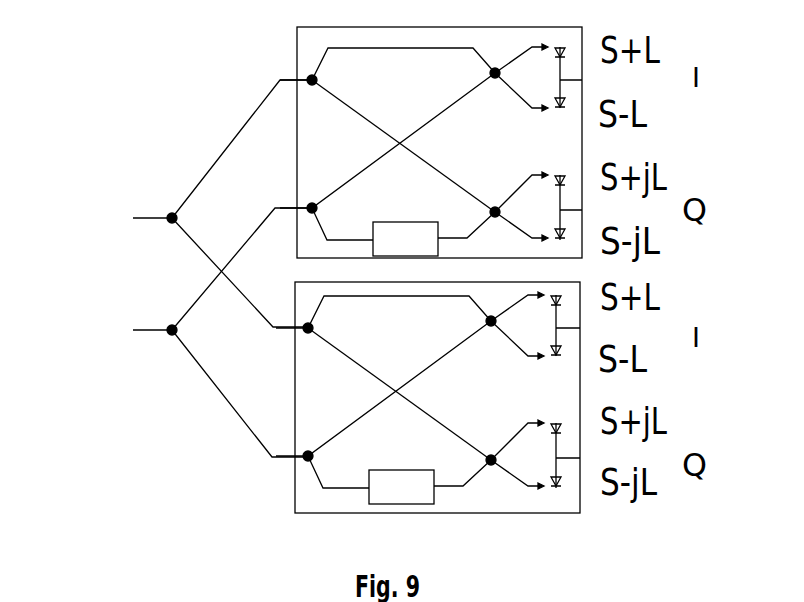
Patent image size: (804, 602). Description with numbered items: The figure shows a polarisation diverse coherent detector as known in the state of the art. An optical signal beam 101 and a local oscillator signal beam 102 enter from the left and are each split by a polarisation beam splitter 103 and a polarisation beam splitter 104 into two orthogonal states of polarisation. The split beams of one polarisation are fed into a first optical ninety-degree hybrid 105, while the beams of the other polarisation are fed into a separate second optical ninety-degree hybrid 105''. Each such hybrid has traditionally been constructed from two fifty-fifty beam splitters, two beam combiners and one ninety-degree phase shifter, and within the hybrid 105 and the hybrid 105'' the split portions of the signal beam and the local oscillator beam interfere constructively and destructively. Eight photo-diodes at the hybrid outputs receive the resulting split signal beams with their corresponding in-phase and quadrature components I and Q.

The optical signal beam 101 is at (114, 212).
The local oscillator signal beam 102 is at (115, 343).
The polarisation beam splitter 103 is at (224, 203).
The polarisation beam splitter 104 is at (224, 332).
The optical 90° hybrid 105 is at (407, 129).
The optical 90° hybrid 105'' is at (391, 401).